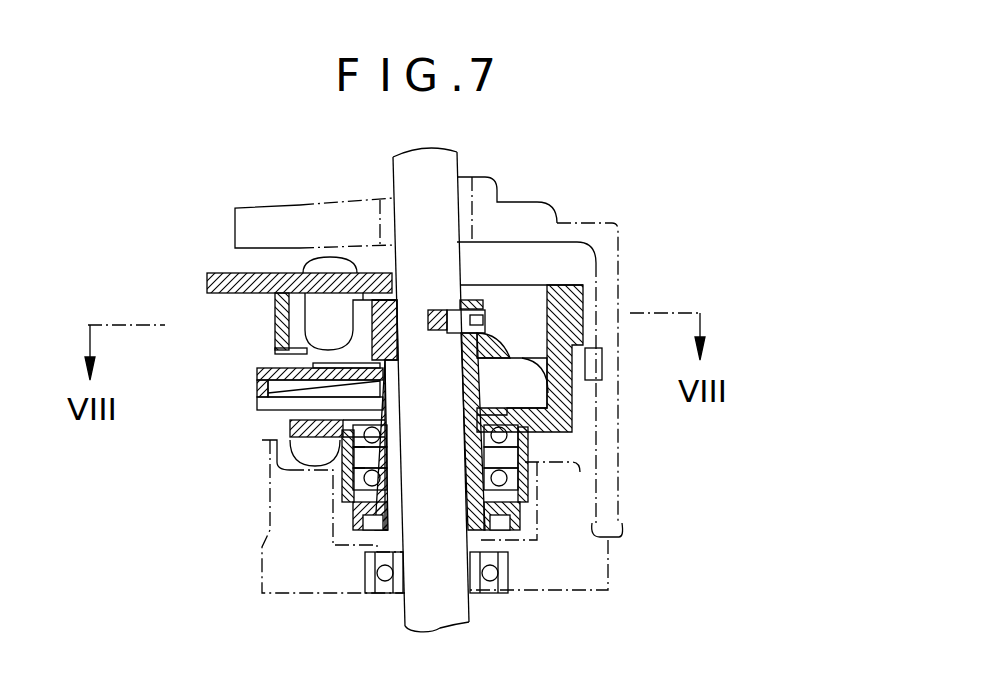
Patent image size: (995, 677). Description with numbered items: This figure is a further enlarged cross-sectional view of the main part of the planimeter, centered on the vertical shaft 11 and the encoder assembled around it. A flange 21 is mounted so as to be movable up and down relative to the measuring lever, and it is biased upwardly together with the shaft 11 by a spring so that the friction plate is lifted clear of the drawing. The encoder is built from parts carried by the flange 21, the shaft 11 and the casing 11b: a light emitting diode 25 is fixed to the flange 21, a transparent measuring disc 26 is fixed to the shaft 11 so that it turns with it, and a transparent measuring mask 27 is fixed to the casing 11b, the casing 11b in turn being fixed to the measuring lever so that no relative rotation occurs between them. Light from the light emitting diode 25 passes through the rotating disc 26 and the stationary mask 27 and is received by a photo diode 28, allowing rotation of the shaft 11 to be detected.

The shaft 11 is at (450, 267).
The casing 11b is at (577, 295).
The flange 21 is at (222, 274).
The light emitting diode 25 is at (317, 312).
The transparent measuring disc 26 is at (553, 393).
The transparent measuring mask 27 is at (257, 395).
The photo diode 28 is at (320, 400).